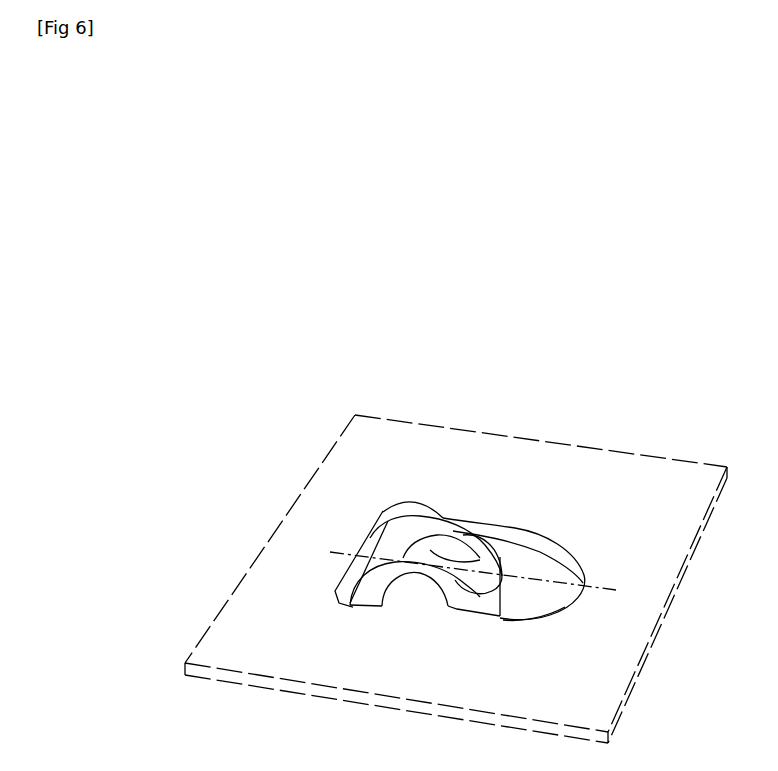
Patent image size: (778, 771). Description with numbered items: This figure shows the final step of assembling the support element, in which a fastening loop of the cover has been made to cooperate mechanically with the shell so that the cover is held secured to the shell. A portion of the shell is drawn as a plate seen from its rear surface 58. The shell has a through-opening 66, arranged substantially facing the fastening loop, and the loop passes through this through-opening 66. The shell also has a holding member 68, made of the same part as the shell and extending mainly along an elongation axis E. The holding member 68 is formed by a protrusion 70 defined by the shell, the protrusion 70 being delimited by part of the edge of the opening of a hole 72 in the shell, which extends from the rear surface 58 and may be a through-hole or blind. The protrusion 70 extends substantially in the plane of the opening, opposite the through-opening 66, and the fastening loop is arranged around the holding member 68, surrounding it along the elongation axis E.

The rear surface 58 is at (557, 458).
The through-opening 66 is at (393, 558).
The holding member 68 is at (440, 557).
The protrusion 70 is at (482, 560).
The hole 72 is at (525, 602).
The elongation axis E is at (598, 581).